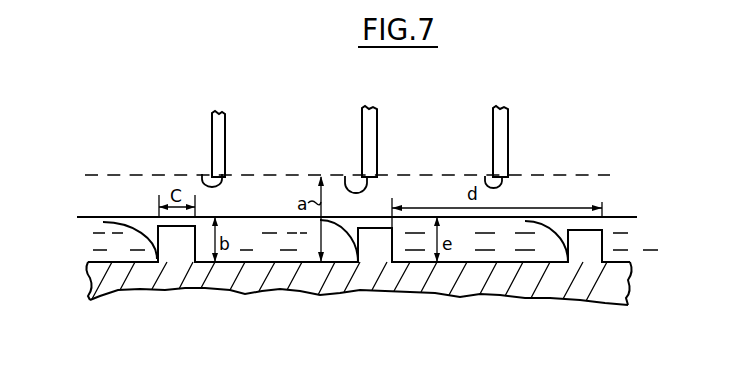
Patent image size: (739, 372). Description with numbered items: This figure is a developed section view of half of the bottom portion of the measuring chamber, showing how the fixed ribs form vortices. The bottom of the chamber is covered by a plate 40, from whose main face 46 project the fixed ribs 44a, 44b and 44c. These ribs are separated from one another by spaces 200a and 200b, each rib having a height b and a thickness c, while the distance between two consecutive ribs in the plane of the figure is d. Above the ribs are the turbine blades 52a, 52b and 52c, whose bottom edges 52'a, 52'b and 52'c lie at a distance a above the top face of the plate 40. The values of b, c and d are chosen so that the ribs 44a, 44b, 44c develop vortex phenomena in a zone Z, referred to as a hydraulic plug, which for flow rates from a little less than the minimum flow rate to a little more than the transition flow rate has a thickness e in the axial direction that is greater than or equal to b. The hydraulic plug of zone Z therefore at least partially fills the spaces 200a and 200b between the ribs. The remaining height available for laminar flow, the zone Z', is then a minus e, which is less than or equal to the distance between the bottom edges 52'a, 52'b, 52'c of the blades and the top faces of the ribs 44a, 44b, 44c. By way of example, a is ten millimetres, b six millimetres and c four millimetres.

The plate 40 is at (311, 281).
The rib 44a is at (169, 238).
The rib 44b is at (373, 248).
The rib 44c is at (582, 242).
The main face of the plate 46 is at (250, 255).
The space 200a is at (288, 240).
The space 200b is at (487, 248).
The turbine blade 52a is at (243, 152).
The turbine blade 52b is at (369, 150).
The turbine blade 52c is at (500, 150).
The bottom edge of the blade 52'a is at (192, 166).
The bottom edge of the blade 52'b is at (342, 169).
The bottom edge of the blade 52'c is at (476, 167).
The hydraulic plug zone Z is at (343, 233).
The laminar flow zone Z' is at (347, 152).